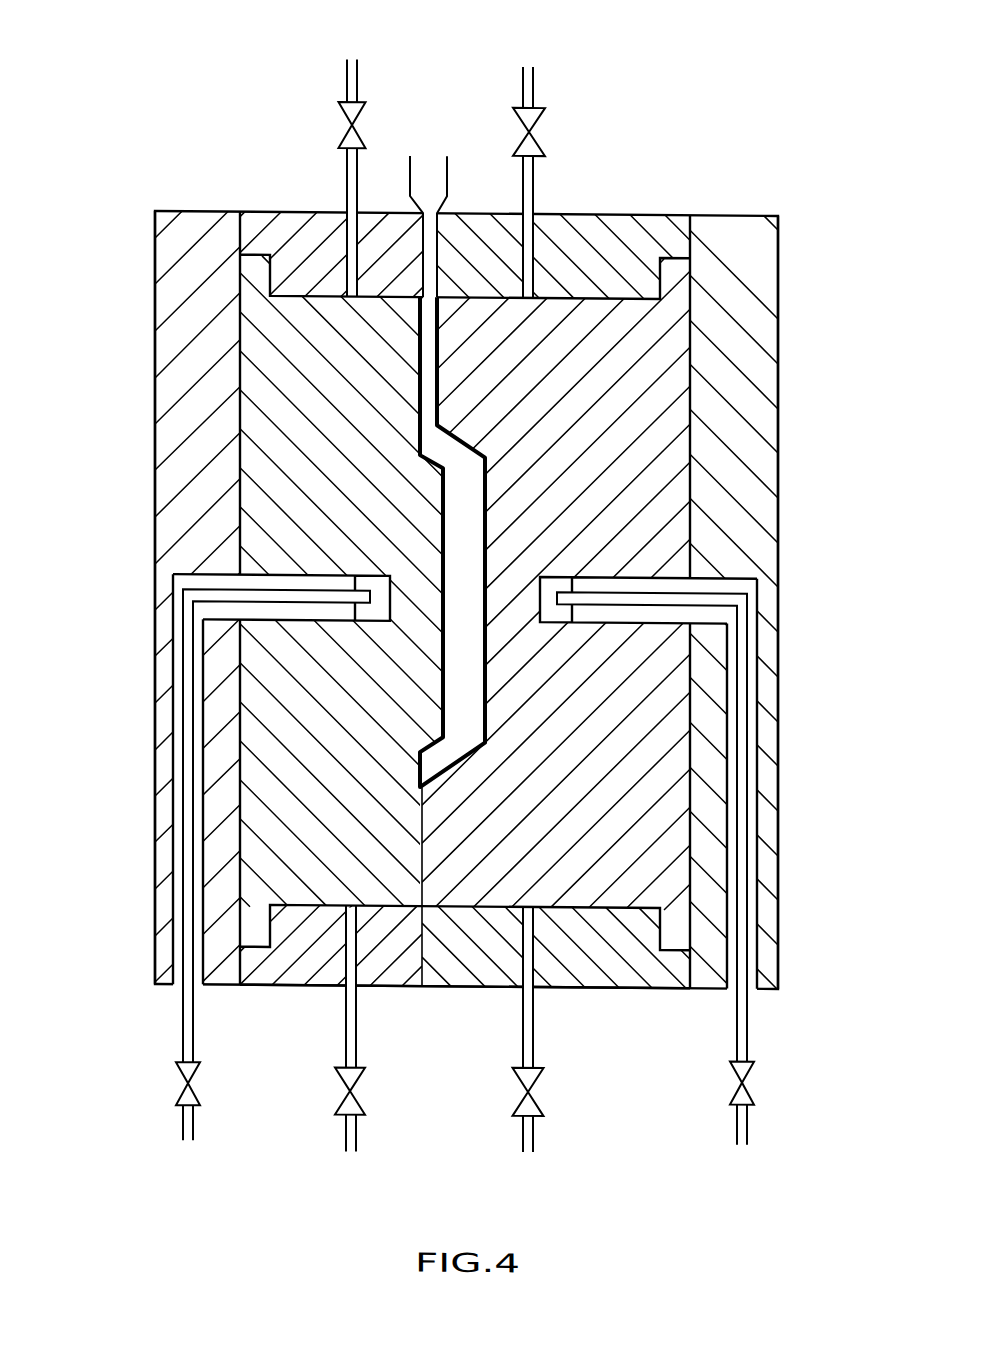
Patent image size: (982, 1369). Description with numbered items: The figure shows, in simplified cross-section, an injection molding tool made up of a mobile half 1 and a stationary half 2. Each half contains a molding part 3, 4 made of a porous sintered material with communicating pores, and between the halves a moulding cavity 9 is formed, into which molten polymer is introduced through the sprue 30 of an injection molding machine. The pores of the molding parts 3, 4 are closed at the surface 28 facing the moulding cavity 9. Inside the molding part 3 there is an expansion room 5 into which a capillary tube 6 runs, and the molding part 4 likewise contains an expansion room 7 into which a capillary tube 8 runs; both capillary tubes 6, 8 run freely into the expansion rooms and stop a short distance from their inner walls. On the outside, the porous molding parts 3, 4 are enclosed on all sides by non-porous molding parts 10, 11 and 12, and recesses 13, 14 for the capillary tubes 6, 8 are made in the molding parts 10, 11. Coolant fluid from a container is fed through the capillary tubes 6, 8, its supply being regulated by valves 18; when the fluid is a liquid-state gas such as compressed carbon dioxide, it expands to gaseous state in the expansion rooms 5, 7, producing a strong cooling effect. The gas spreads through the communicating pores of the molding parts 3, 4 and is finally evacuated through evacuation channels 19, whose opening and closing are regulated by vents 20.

The mobile half 1 is at (677, 208).
The stationary half 2 is at (262, 211).
The molding part 3 is at (655, 330).
The molding part 4 is at (268, 337).
The expansion room 5 is at (560, 583).
The capillary tube 6 is at (640, 598).
The expansion room 7 is at (380, 577).
The capillary tube 8 is at (268, 590).
The moulding cavity 9 is at (452, 653).
The non-porous molding part 10 is at (762, 367).
The non-porous molding part 11 is at (183, 416).
The non-porous molding part 12 is at (318, 211).
The recess 13 is at (752, 776).
The recess 14 is at (176, 832).
The valves 18 is at (187, 1085).
The evacuation channels 19 is at (357, 168).
The vents 20 is at (352, 123).
The surface 28 is at (443, 686).
The sprue 30 is at (426, 198).